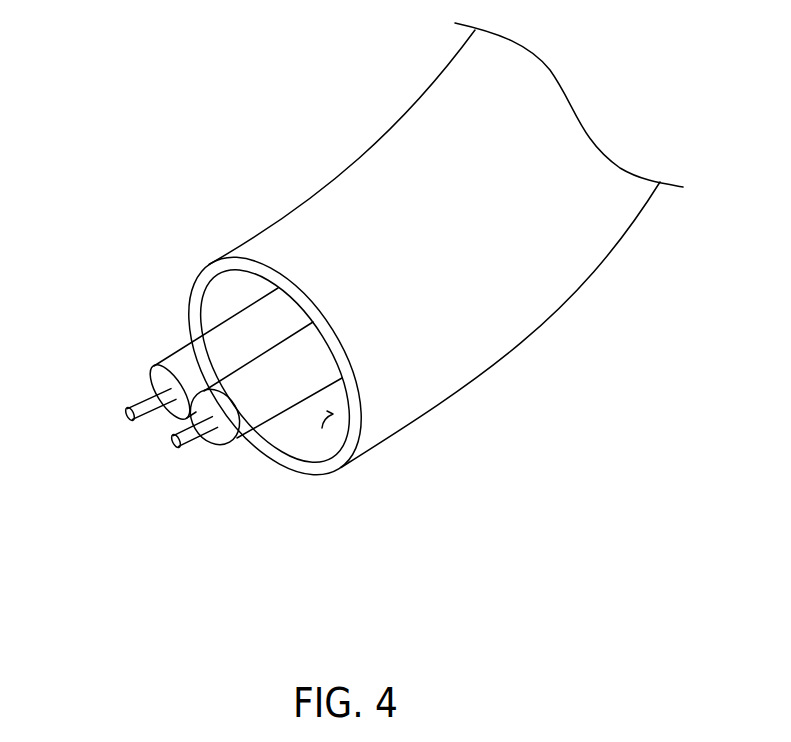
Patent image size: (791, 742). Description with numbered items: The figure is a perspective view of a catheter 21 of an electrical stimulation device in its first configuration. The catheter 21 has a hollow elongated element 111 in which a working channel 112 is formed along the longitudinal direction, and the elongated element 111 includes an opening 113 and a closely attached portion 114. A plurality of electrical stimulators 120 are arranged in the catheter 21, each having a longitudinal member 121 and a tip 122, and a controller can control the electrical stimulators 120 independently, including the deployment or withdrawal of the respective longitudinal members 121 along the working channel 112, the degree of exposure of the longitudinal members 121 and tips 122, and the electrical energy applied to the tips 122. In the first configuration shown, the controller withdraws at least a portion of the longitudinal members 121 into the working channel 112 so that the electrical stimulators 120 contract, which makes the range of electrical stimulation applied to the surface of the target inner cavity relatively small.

The catheter 21 is at (281, 140).
The elongated element 111 is at (492, 315).
The working channel 112 is at (322, 428).
The opening 113 is at (289, 456).
The closely attached portion 114 is at (340, 452).
The electrical stimulators 120 is at (142, 464).
The longitudinal members 121 is at (240, 338).
The tips 122 is at (125, 413).